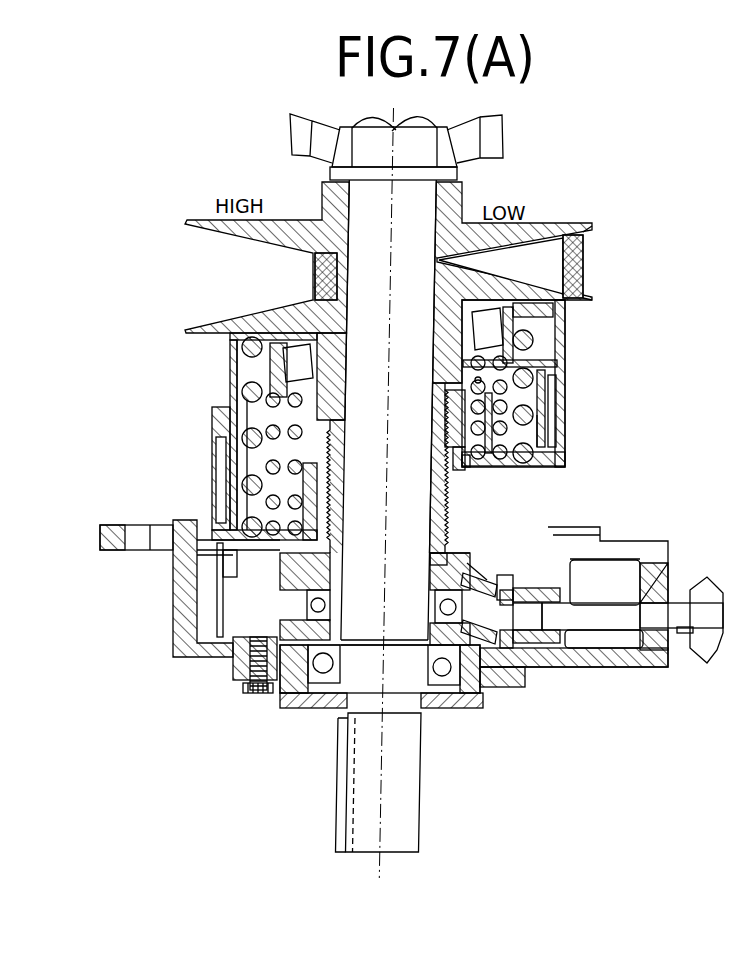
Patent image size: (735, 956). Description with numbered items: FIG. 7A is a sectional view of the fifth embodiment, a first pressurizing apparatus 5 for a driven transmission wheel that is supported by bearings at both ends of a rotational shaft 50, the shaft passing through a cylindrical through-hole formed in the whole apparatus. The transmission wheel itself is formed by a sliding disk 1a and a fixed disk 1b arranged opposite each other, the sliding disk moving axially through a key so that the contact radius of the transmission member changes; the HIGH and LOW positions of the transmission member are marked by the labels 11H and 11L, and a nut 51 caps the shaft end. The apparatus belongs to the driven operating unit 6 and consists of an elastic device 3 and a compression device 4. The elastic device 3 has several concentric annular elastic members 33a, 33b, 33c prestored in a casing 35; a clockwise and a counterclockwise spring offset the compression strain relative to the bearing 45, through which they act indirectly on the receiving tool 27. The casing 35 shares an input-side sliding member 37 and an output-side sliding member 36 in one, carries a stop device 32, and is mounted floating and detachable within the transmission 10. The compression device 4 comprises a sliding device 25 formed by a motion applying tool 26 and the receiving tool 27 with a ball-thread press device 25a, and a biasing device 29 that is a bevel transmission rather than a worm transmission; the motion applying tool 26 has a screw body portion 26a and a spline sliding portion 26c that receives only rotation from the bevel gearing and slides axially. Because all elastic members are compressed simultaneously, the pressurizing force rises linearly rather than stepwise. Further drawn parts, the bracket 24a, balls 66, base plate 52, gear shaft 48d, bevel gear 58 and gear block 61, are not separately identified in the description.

The nut 51 is at (499, 137).
The fixed disk 1b is at (563, 222).
The high speed friction ring 11H is at (315, 280).
The sliding disk 1a is at (520, 302).
The output-side sliding member 36 is at (583, 242).
The low speed friction ring 11L is at (583, 272).
The casing 35 is at (229, 371).
The stop device 32 is at (209, 416).
The input-side sliding member 37 is at (213, 455).
The elastic device 3 is at (580, 337).
The bearing 45 is at (480, 325).
The first-stage elastic member 33a is at (478, 380).
The elastic member 33b is at (547, 397).
The elastic member 33c is at (537, 415).
The first pressurizing apparatus 5 is at (660, 452).
The receiving tool 27 is at (480, 467).
The compression device 4 is at (515, 498).
The motion applying tool 26 is at (447, 490).
The screw body portion 26a is at (445, 523).
The sliding portion 26c is at (452, 565).
The bracket 24a is at (200, 603).
The transmission 10 is at (173, 540).
The ball-thread press device 25a is at (280, 550).
The ball 66 is at (307, 600).
The base plate 52 is at (430, 680).
The rotational shaft 50 is at (370, 777).
The biasing device 29 is at (553, 521).
The sliding device 25 is at (535, 537).
The gear shaft 48d is at (593, 620).
The bevel gear 58 is at (500, 587).
The gear block 61 is at (497, 600).
The driven operating unit 6 is at (641, 700).